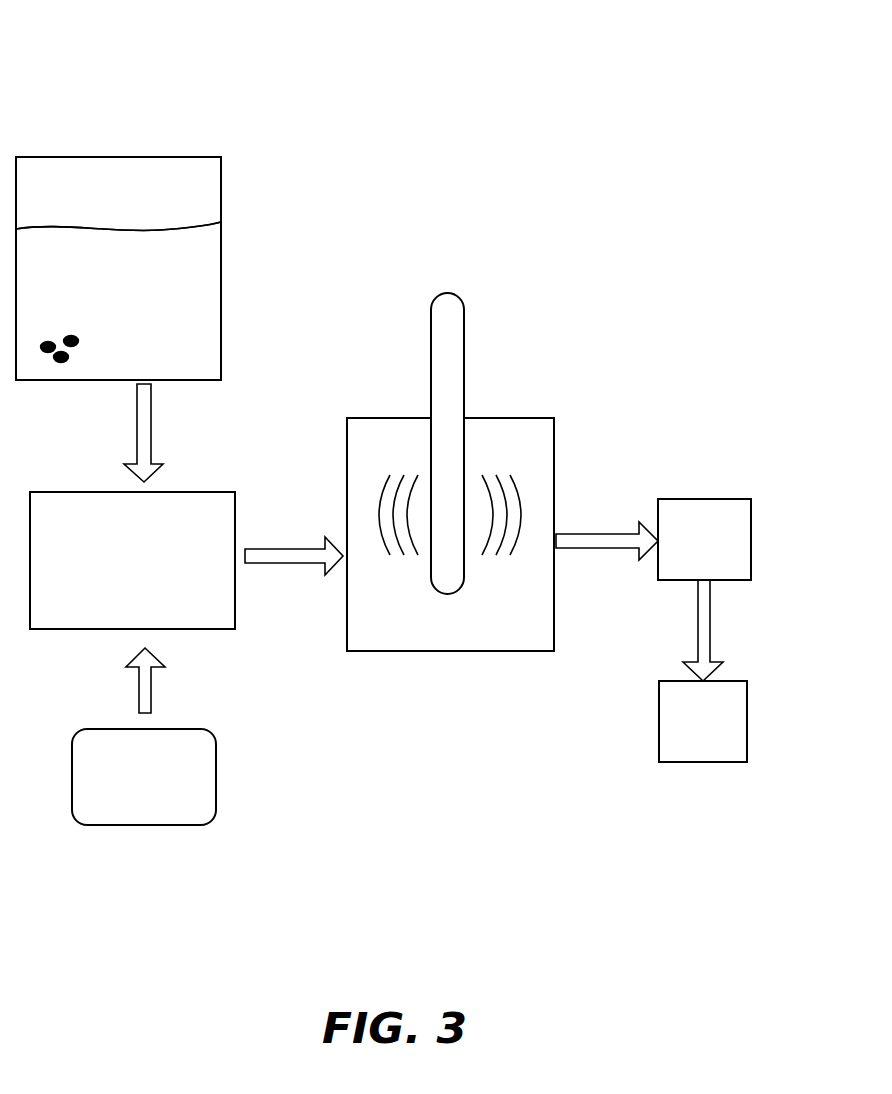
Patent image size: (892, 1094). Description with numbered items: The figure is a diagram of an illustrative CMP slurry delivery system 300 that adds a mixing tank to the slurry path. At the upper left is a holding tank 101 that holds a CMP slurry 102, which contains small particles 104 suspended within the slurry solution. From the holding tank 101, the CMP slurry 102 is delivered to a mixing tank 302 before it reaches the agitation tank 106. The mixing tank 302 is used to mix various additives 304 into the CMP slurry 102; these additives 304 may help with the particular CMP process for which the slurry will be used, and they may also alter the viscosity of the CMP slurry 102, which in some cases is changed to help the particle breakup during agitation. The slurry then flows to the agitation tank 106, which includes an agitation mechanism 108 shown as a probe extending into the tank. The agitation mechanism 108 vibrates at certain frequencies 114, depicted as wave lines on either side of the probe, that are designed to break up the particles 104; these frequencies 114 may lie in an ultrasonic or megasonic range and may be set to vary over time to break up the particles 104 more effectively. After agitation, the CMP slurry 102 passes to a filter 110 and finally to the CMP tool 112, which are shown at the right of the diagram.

The CMP slurry delivery system 300 is at (133, 112).
The holding tank 101 is at (98, 201).
The CMP slurry 102 is at (114, 322).
The particles 104 is at (61, 362).
The mixing tank 302 is at (113, 574).
The additives 304 is at (124, 791).
The agitation tank 106 is at (366, 639).
The agitation mechanism 108 is at (464, 353).
The frequencies 114 is at (515, 500).
The filter 110 is at (685, 552).
The CMP tool 112 is at (684, 734).